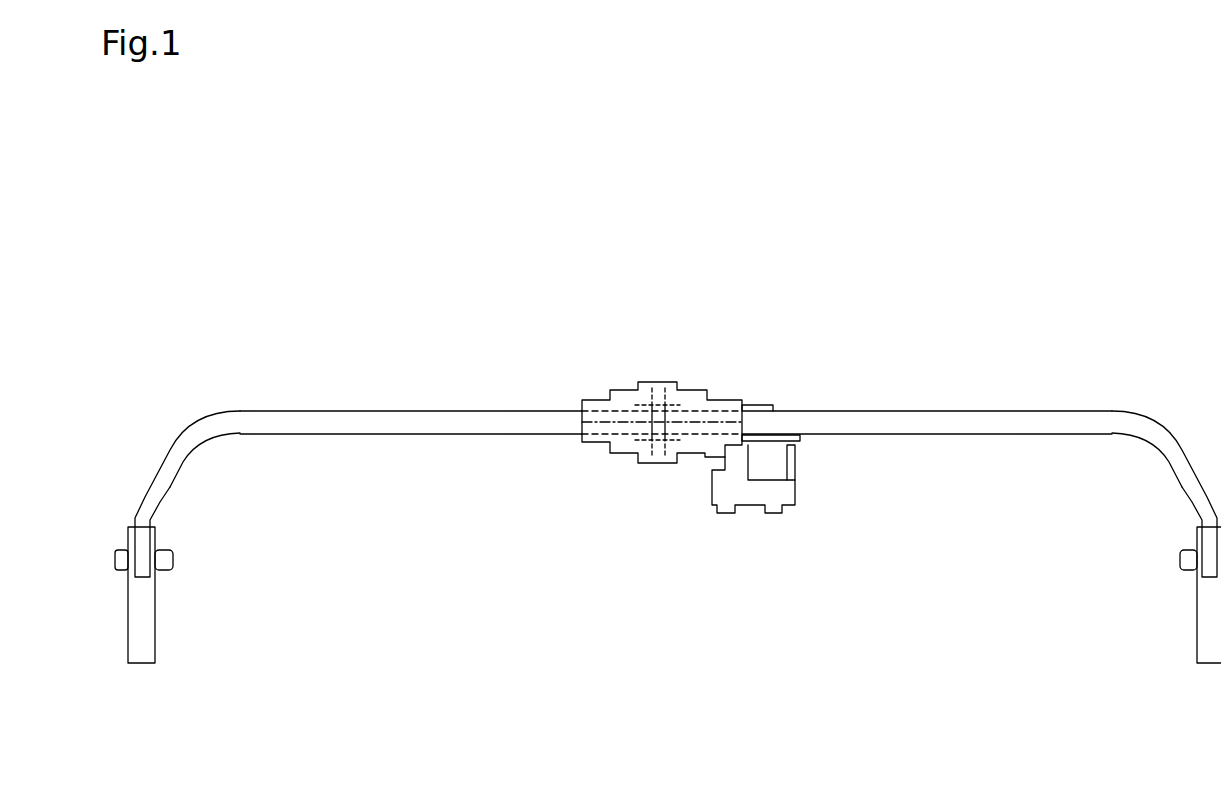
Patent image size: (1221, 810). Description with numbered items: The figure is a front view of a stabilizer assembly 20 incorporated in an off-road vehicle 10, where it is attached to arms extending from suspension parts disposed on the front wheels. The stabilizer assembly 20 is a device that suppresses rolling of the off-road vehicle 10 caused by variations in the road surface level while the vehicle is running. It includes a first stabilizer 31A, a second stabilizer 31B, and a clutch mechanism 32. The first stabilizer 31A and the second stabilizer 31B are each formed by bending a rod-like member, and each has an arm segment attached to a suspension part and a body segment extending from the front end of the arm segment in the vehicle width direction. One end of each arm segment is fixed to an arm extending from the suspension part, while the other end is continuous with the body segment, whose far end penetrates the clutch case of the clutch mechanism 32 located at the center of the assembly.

The off-road vehicle 10 is at (668, 494).
The stabilizer assembly 20 is at (402, 398).
The first stabilizer 31A is at (298, 418).
The second stabilizer 31B is at (975, 420).
The clutch mechanism 32 is at (622, 392).